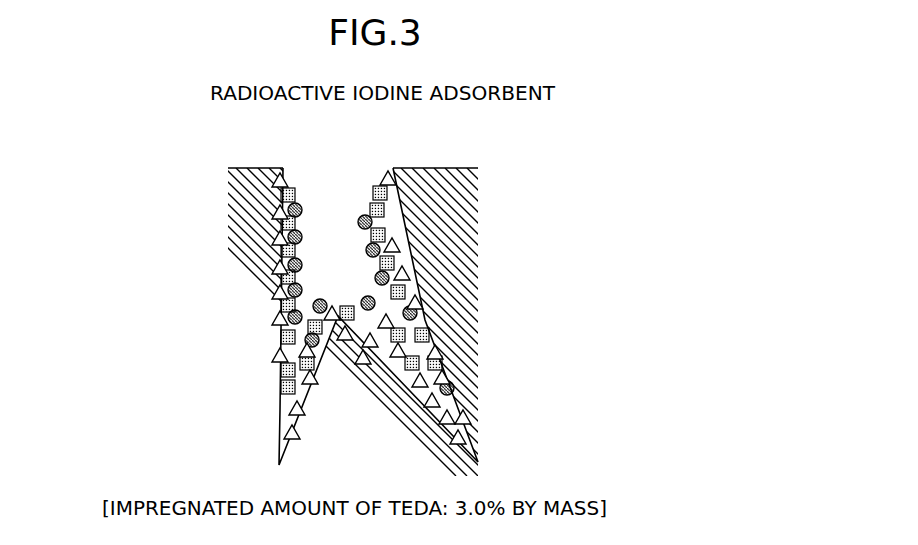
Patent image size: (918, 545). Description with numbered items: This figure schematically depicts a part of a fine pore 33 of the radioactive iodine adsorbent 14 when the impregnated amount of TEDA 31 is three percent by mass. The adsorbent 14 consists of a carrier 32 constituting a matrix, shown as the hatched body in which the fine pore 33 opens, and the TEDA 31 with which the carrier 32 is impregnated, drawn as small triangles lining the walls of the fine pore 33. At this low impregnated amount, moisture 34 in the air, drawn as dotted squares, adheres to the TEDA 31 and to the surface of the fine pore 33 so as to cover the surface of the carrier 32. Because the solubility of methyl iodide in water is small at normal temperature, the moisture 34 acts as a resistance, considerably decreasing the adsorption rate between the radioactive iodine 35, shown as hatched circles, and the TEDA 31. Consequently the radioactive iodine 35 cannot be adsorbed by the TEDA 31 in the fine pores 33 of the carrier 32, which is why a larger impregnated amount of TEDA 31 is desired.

The radioactive iodine adsorbent 14 is at (358, 149).
The TEDA 31 is at (460, 419).
The carrier 32 is at (462, 196).
The fine pore 33 is at (283, 425).
The moisture 34 is at (440, 334).
The radioactive iodine 35 is at (454, 387).